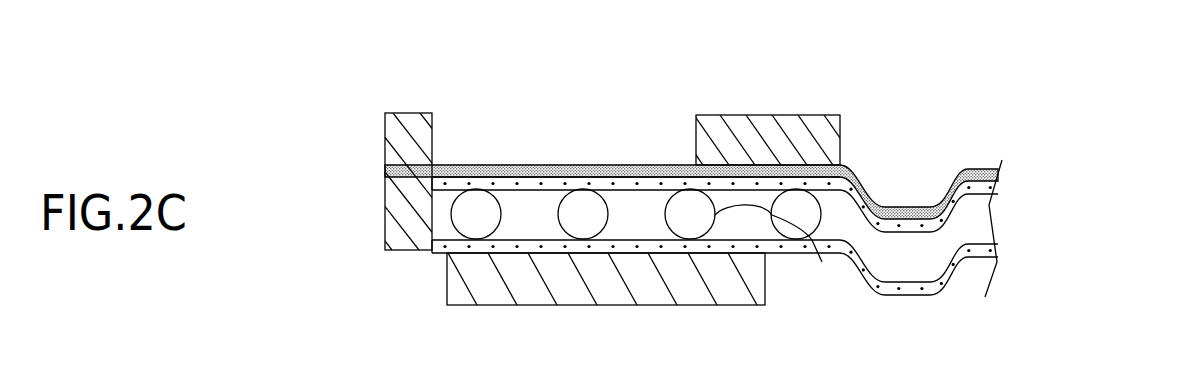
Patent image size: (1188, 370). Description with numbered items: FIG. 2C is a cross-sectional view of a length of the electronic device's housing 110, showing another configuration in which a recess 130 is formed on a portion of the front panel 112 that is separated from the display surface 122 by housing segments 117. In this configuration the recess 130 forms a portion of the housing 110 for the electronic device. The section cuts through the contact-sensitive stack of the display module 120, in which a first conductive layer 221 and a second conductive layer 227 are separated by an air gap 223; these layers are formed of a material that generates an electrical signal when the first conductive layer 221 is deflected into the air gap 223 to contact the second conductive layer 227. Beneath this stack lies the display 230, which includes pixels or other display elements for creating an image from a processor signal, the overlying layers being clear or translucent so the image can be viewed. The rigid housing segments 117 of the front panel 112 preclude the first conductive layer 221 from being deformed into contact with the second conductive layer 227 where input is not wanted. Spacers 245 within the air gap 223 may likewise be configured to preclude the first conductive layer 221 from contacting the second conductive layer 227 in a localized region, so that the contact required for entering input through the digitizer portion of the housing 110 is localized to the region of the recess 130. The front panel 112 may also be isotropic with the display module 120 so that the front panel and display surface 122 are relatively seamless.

The housing 110 is at (840, 101).
The front panel 112 is at (387, 133).
The housing segments 117 is at (780, 115).
The display module 120 is at (1075, 93).
The display surface 122 is at (590, 166).
The recess 130 is at (906, 205).
The first conductive layer 221 is at (502, 181).
The air gap 223 is at (552, 230).
The second conductive layer 227 is at (437, 254).
The display 230 is at (502, 298).
The spacers 245 is at (818, 256).